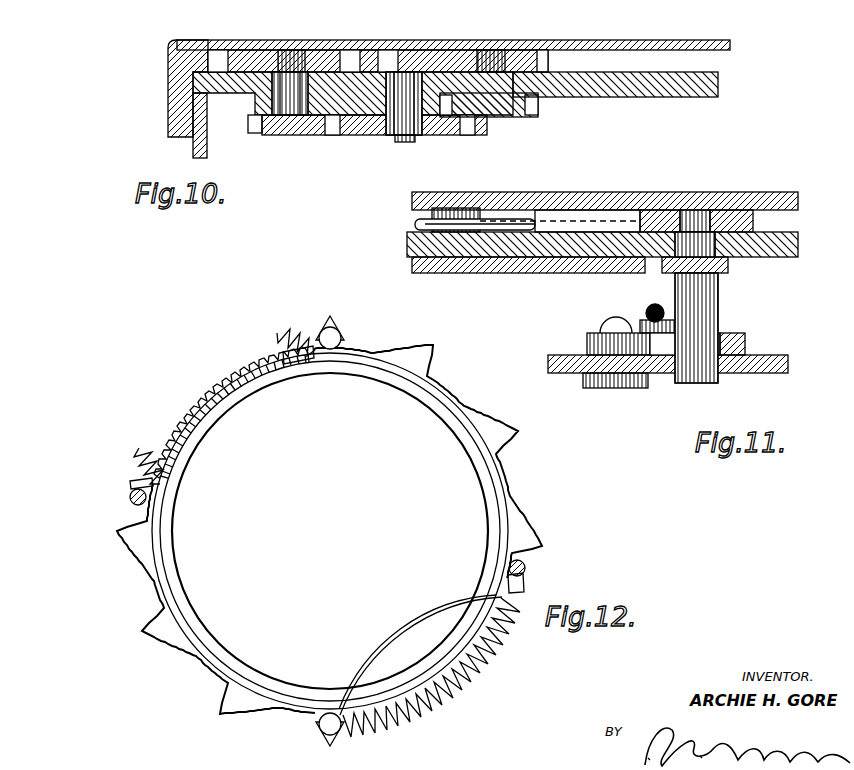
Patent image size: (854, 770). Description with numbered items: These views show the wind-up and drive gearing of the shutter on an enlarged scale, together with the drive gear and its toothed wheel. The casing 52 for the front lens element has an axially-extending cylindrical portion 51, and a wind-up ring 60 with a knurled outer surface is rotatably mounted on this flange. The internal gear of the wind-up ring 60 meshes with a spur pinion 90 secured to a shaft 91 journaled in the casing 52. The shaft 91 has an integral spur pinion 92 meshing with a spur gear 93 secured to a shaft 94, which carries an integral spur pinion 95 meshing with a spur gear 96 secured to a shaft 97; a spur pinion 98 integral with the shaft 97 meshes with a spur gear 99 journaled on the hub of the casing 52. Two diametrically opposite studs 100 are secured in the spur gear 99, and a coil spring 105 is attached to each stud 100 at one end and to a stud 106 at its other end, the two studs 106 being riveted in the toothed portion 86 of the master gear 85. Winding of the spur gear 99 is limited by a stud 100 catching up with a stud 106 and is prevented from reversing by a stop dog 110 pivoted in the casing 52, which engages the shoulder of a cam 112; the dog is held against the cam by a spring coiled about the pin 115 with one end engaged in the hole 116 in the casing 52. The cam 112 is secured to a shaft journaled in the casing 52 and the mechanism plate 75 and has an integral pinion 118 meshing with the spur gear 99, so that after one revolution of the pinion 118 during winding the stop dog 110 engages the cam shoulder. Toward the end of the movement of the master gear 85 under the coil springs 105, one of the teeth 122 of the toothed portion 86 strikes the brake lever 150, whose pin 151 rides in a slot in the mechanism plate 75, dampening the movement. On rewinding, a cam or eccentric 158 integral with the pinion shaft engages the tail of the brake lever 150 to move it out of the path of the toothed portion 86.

In FIG. 10, the cylindrical portion 51 is at (205, 130).
In FIG. 10, the casing 52 is at (615, 93).
In FIG. 11, the casing 52 is at (765, 257).
In FIG. 10, the wind-up ring 60 is at (192, 45).
In FIG. 11, the mechanism plate 75 is at (772, 360).
In FIG. 12, the master gear 85 is at (228, 395).
In FIG. 12, the toothed portion of master gear 86 is at (173, 582).
In FIG. 10, the spur pinion 90 is at (330, 48).
In FIG. 10, the shaft 91 is at (285, 98).
In FIG. 10, the spur pinion 92 is at (262, 128).
In FIG. 10, the spur gear 93 is at (445, 133).
In FIG. 10, the shaft 94 is at (400, 135).
In FIG. 10, the spur pinion 95 is at (420, 50).
In FIG. 10, the spur gear 96 is at (530, 50).
In FIG. 10, the shaft 97 is at (492, 50).
In FIG. 10, the spur pinion 98 is at (530, 105).
In FIG. 11, the spur gear 99 is at (625, 272).
In FIG. 12, the studs 100 is at (132, 493).
In FIG. 12, the coil springs 105 is at (152, 446).
In FIG. 12, the studs 106 is at (334, 333).
In FIG. 11, the stop dog 110 is at (600, 215).
In FIG. 11, the cam 112 is at (740, 215).
In FIG. 11, the pin 115 is at (462, 215).
In FIG. 11, the hole 116 is at (718, 308).
In FIG. 11, the pinion 118 is at (733, 262).
In FIG. 12, the teeth 122 is at (508, 433).
In FIG. 11, the brake lever 150 is at (600, 342).
In FIG. 11, the pin 151 is at (612, 388).
In FIG. 11, the cam or eccentric 158 is at (712, 345).